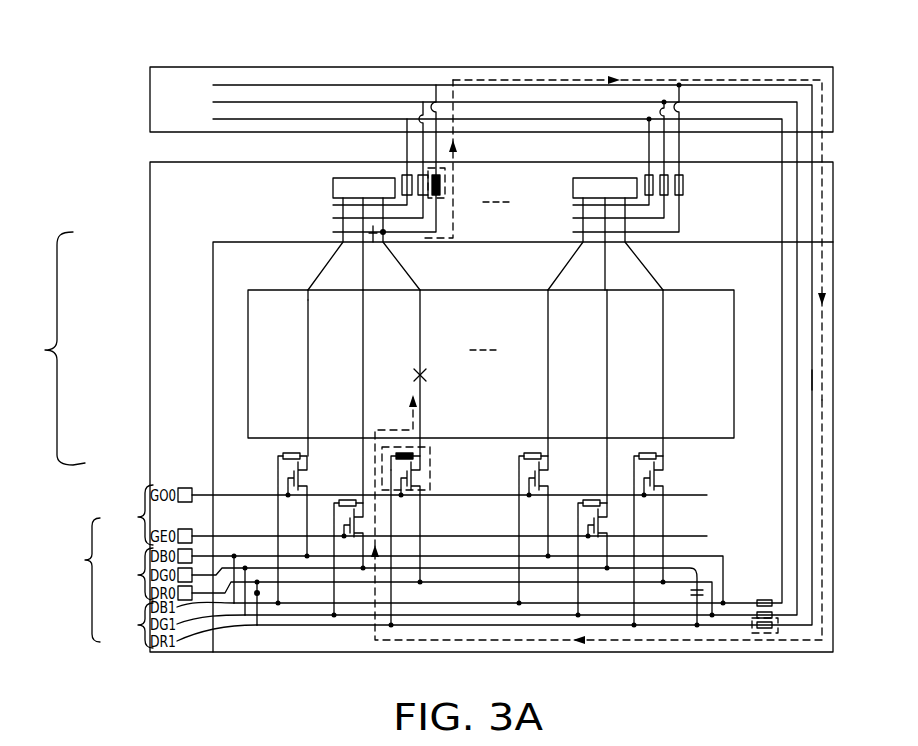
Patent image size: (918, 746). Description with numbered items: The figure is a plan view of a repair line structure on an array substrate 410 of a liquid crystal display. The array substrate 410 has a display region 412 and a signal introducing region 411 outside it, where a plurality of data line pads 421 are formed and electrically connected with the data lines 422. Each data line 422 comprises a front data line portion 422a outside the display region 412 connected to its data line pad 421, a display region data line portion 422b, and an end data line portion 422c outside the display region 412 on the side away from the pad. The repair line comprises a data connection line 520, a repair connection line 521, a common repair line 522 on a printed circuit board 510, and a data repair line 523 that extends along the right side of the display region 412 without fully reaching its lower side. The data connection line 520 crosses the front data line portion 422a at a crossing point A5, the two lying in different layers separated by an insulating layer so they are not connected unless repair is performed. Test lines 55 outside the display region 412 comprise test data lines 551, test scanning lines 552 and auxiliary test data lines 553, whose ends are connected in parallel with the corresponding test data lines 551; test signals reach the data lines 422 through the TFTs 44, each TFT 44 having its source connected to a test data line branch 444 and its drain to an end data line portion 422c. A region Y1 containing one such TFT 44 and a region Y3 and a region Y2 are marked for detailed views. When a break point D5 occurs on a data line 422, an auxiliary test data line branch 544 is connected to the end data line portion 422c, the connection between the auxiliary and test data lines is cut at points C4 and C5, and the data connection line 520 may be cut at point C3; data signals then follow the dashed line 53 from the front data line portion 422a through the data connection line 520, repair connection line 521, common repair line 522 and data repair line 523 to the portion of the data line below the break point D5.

The printed circuit board 510 is at (140, 88).
The common repair line 522 is at (273, 85).
The data line pad 421 is at (602, 192).
The array substrate 410 is at (135, 153).
The repair connection line 521 is at (457, 150).
The node Y3 is at (448, 183).
The data connection line 520 is at (456, 216).
The signal introducing region 411 is at (748, 206).
The front data line portion 422a is at (336, 252).
The cut-off point C3 is at (377, 253).
The crossing point A5 is at (385, 233).
The display region 412 is at (702, 340).
The data line 422 is at (46, 348).
The display region data line portion 422b is at (306, 378).
The break point D5 is at (437, 378).
The region Y1 is at (432, 450).
The data repair line 523 is at (812, 380).
The end data line portion 422c is at (306, 446).
The dashed line 53 is at (822, 467).
The TFT 44 is at (665, 472).
The test data line branch 444 is at (424, 514).
The test scanning lines 552 is at (129, 515).
The test lines 55 is at (80, 580).
The test data lines 551 is at (129, 574).
The cut-off point C5 is at (703, 569).
The auxiliary test data lines 553 is at (126, 627).
The cut-off point C4 is at (257, 593).
The auxiliary test data line branch 544 is at (393, 600).
The node Y2 is at (779, 630).